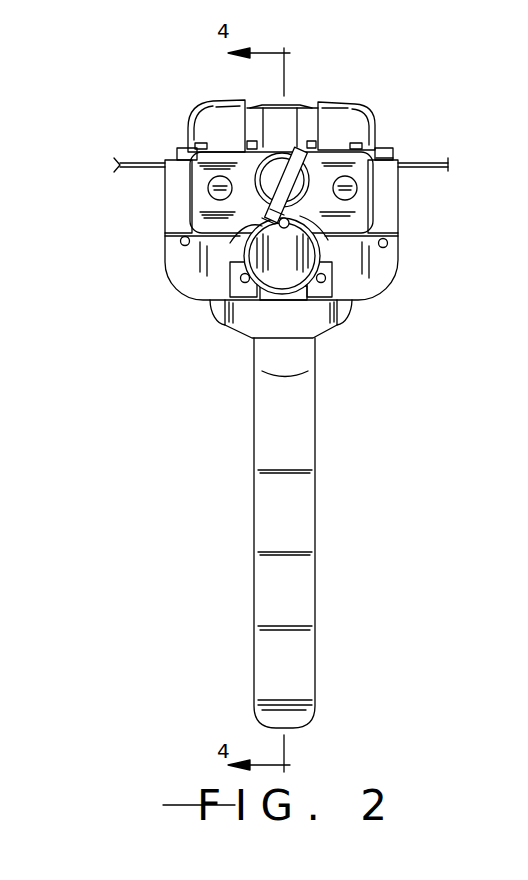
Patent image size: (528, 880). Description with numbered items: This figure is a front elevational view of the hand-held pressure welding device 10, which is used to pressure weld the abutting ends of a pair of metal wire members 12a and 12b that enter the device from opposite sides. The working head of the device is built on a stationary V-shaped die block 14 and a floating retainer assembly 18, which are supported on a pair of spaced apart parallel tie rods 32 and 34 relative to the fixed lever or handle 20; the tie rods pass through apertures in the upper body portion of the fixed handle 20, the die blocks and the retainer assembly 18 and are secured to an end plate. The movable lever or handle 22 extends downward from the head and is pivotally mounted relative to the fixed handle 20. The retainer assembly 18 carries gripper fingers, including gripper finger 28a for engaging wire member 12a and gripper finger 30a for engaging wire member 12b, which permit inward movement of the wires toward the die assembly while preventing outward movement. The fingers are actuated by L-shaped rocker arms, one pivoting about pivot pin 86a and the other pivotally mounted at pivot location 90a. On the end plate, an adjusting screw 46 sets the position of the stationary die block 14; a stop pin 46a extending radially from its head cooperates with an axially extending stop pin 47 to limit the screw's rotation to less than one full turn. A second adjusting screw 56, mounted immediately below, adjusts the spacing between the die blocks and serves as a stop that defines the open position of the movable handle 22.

The pressure welding device 10 is at (368, 370).
The wire member 12a is at (432, 162).
The wire member 12b is at (143, 160).
The stationary V-shaped die block 14 is at (158, 226).
The floating retainer assembly 18 is at (204, 318).
The fixed lever or handle 20 is at (362, 96).
The movable lever or handle 22 is at (330, 506).
The gripper finger 28a is at (385, 158).
The gripper finger 30a is at (177, 152).
The tie rod 32 is at (357, 190).
The tie rod 34 is at (208, 189).
The adjusting screw 46 is at (302, 147).
The stop pin 46a is at (240, 237).
The stop pin 47 is at (291, 221).
The second adjusting screw 56 is at (313, 252).
The pivot pin 86a is at (390, 246).
The pivot location 90a is at (181, 247).